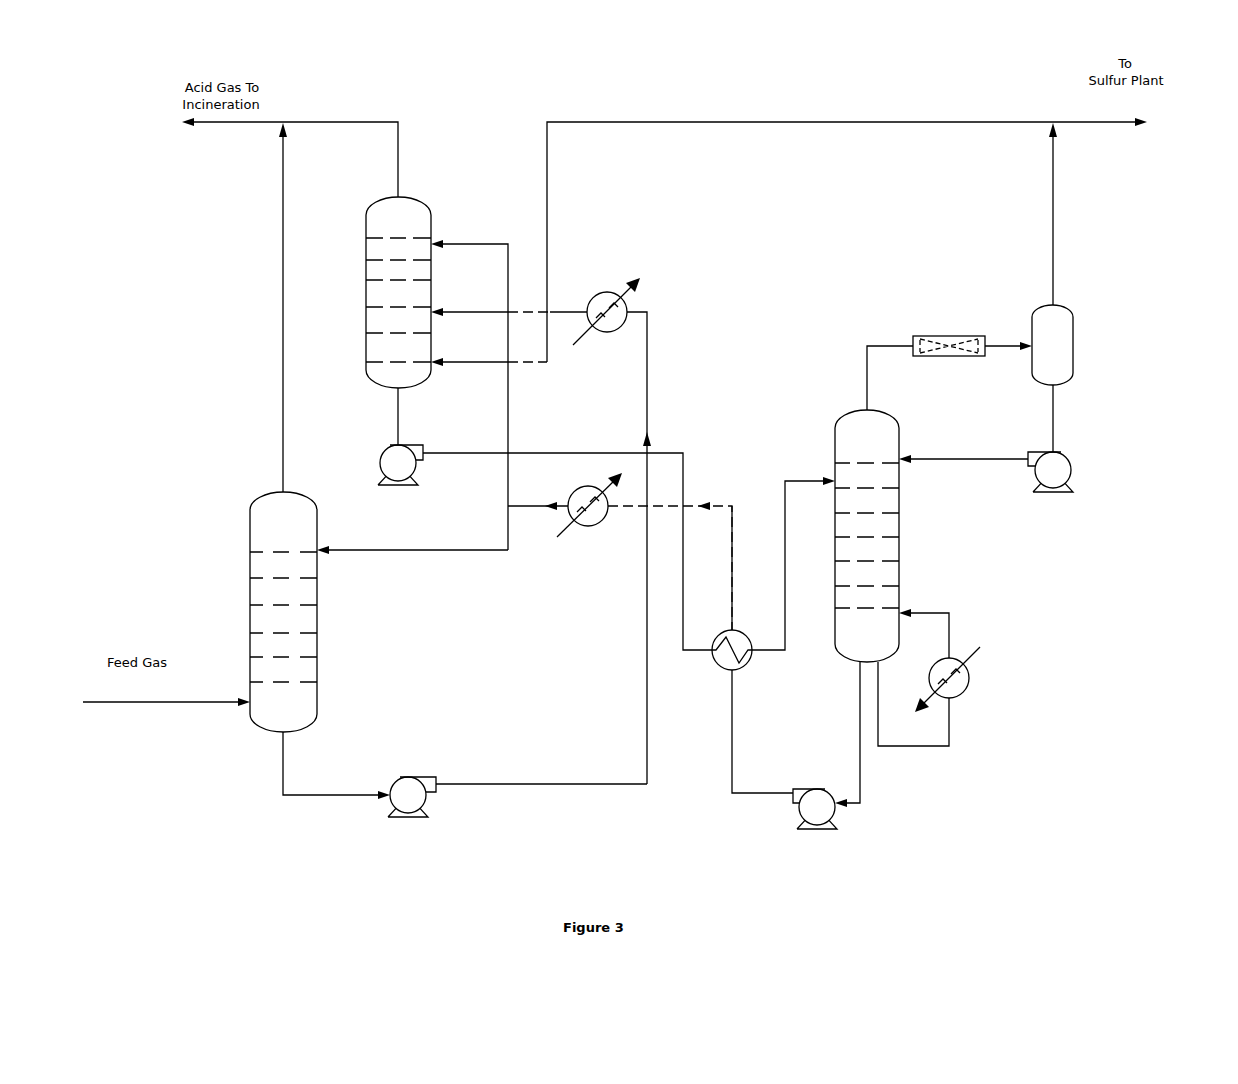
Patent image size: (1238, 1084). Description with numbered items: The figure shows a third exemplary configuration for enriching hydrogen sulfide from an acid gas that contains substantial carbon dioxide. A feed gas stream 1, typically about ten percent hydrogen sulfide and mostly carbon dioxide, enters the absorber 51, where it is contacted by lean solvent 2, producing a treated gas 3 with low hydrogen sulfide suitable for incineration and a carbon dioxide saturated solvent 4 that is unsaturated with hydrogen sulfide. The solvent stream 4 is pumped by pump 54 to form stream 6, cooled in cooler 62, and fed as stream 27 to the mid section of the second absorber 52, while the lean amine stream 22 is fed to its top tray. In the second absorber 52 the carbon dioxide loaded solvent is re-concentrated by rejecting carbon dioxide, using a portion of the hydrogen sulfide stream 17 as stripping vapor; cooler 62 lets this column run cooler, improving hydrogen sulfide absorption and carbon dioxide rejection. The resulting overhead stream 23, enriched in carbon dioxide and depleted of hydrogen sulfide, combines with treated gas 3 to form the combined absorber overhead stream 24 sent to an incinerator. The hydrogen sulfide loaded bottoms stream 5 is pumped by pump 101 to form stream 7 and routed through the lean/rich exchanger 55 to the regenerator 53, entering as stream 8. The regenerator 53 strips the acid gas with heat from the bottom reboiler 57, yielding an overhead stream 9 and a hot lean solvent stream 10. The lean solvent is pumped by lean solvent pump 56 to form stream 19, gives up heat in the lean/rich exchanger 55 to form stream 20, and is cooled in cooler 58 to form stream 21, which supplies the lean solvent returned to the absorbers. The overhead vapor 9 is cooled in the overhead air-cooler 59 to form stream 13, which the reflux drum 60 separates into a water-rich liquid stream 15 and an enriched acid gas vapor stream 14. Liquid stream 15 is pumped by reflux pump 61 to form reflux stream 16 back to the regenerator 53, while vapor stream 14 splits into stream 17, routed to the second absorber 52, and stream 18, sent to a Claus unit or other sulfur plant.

The feed gas stream 1 is at (193, 700).
The lean solvent 2 is at (450, 549).
The treated gas 3 is at (283, 385).
The carbon dioxide saturated solvent 4 is at (355, 794).
The rich solvent stream from second absorber 5 is at (398, 430).
The pumped solvent stream 6 is at (586, 783).
The pumped rich solvent stream 7 is at (478, 452).
The heated rich solvent stream 8 is at (800, 480).
The overhead stream 9 is at (867, 380).
The lean solvent stream 10 is at (860, 730).
The cooled overhead stream 13 is at (1012, 342).
The vapor stream 14 is at (1053, 210).
The liquid stream 15 is at (1053, 430).
The reflux stream 16 is at (970, 458).
The hydrogen sulfide feed stream 17 is at (762, 120).
The acid gas stream to sulfur plant 18 is at (1100, 121).
The pumped lean solvent stream 19 is at (732, 748).
The lean solvent stream 20 is at (708, 504).
The cooled lean solvent stream 21 is at (525, 505).
The lean amine stream 22 is at (482, 243).
The overhead stream of second absorber 23 is at (358, 120).
The combined absorber overhead stream 24 is at (222, 125).
The cooled solvent feed stream 27 is at (453, 310).
The absorber 51 is at (250, 582).
The second absorber 52 is at (366, 302).
The regenerator 53 is at (835, 556).
The pump 54 is at (420, 778).
The lean/rich exchanger 55 is at (744, 630).
The lean solvent pump 56 is at (830, 830).
The reboiler 57 is at (966, 692).
The cooler 58 is at (575, 486).
The overhead air-cooler 59 is at (935, 336).
The reflux drum 60 is at (1072, 378).
The reflux pump 61 is at (1062, 492).
The cooler 62 is at (600, 292).
The pump 101 is at (378, 470).